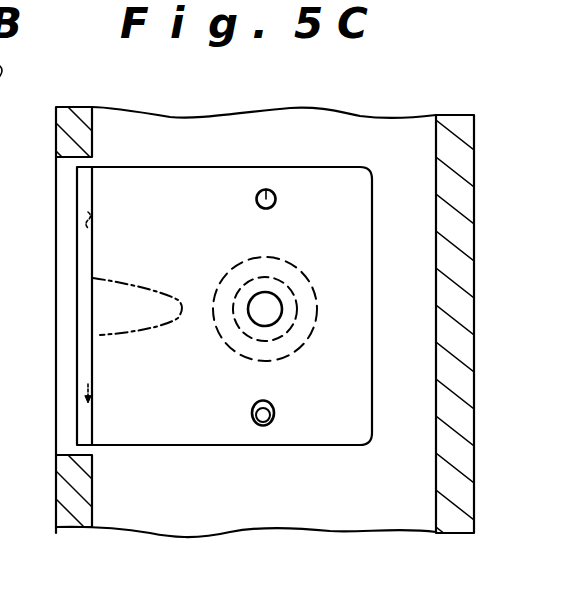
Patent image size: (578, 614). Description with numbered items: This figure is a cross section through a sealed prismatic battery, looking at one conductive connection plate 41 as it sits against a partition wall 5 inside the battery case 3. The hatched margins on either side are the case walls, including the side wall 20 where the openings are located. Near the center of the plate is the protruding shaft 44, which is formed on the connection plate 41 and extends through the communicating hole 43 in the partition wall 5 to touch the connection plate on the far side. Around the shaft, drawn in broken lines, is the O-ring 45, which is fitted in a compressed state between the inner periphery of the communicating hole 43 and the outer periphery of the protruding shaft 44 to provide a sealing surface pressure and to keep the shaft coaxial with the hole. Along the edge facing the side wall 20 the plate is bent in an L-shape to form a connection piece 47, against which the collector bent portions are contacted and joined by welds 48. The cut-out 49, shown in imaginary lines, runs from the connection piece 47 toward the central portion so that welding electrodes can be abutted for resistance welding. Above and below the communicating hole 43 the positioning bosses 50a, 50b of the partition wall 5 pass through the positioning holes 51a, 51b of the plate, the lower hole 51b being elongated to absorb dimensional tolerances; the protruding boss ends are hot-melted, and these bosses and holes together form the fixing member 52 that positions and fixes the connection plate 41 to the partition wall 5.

The battery case 3 is at (478, 204).
The partition wall 5 is at (314, 500).
The side wall 20 is at (63, 498).
The conductive connection plate 41 is at (207, 420).
The communicating hole 43 is at (313, 314).
The protruding shaft 44 is at (268, 304).
The O-ring 45 is at (297, 340).
The connection piece 47 is at (85, 250).
The weld 48 is at (78, 217).
The cut-out 49 is at (128, 286).
The positioning boss 50a is at (267, 197).
The positioning boss 50b is at (272, 420).
The positioning hole 51a is at (254, 192).
The positioning hole 51b is at (257, 426).
The fixing member 52 is at (283, 195).